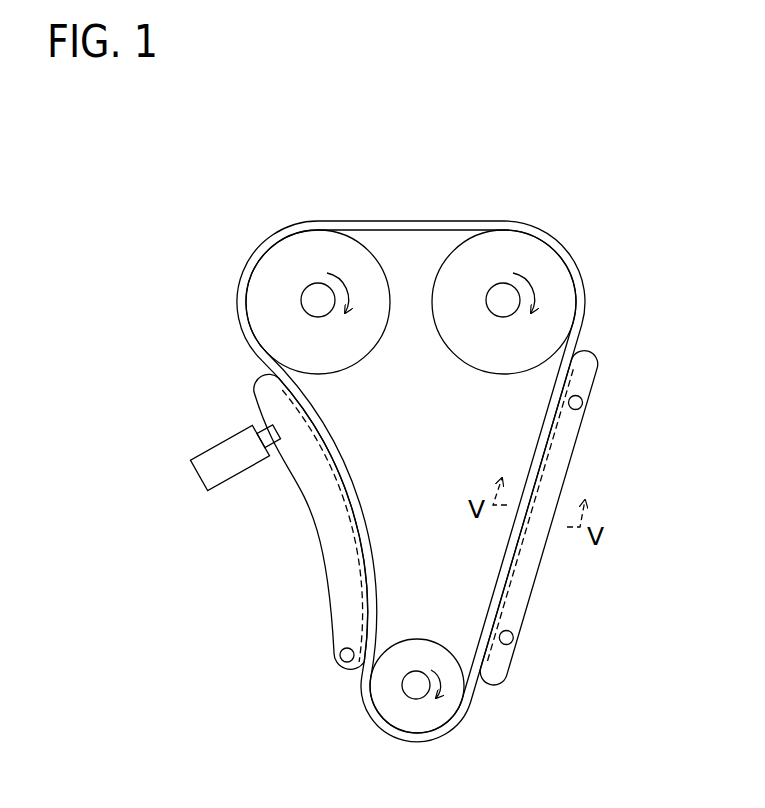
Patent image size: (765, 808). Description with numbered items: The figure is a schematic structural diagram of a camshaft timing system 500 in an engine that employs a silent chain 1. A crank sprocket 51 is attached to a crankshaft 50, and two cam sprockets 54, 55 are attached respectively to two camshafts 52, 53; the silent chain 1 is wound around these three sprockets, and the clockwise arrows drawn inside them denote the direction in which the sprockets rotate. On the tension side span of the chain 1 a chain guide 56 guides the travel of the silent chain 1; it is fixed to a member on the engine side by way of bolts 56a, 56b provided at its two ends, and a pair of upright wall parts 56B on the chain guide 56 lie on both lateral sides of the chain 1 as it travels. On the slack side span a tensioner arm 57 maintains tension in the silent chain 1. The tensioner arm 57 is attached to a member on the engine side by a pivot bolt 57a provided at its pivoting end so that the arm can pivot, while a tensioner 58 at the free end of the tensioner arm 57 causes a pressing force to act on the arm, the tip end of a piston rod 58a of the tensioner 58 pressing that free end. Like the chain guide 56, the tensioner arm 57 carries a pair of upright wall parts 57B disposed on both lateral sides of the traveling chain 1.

The camshaft timing system 500 is at (333, 163).
The silent chain 1 is at (482, 219).
The crankshaft 50 is at (409, 690).
The crank sprocket 51 is at (441, 712).
The camshaft 52 is at (320, 306).
The camshaft 53 is at (503, 306).
The cam sprocket 54 is at (258, 326).
The cam sprocket 55 is at (568, 298).
The chain guide 56 is at (547, 529).
The bolt 56a is at (583, 403).
The bolt 56b is at (511, 644).
The upright wall parts 56B is at (508, 558).
The tensioner arm 57 is at (342, 535).
The pivot bolt 57a is at (340, 657).
The upright wall parts 57B is at (345, 483).
The tensioner 58 is at (221, 444).
The piston rod 58a is at (258, 424).